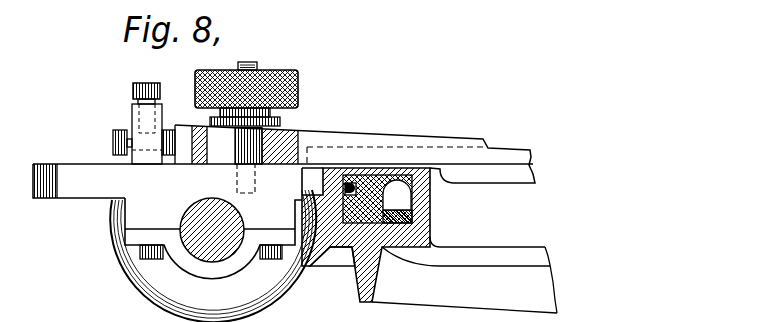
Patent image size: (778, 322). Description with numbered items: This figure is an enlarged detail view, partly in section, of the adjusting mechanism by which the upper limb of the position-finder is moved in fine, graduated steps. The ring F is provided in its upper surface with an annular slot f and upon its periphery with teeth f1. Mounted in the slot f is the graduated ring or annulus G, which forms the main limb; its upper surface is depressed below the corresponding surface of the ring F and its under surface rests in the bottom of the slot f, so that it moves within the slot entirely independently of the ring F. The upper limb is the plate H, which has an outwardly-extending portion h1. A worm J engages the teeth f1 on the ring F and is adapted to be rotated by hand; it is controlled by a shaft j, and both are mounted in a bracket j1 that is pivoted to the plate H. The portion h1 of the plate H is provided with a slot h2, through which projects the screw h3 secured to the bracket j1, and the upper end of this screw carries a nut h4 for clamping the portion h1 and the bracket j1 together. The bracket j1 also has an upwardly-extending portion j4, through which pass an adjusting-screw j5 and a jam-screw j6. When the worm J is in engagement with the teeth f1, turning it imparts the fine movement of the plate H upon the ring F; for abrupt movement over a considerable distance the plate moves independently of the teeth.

The ring F is at (432, 220).
The annular slot f is at (405, 196).
The teeth f1 is at (311, 250).
The graduated ring or annulus G is at (377, 177).
The plate H is at (284, 146).
The outwardly-extending portion of the plate h1 is at (342, 131).
The slot h2 is at (235, 146).
The screw h3 is at (240, 173).
The nut h4 is at (298, 82).
The worm J is at (213, 256).
The shaft j is at (238, 211).
The bracket j1 is at (125, 198).
The upwardly-extending portion of the bracket j4 is at (137, 113).
The adjusting-screw j5 is at (113, 143).
The jam-screw j6 is at (145, 84).